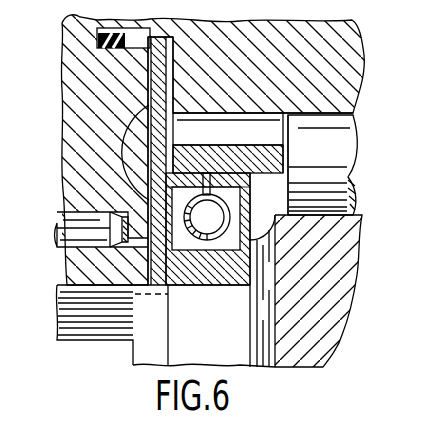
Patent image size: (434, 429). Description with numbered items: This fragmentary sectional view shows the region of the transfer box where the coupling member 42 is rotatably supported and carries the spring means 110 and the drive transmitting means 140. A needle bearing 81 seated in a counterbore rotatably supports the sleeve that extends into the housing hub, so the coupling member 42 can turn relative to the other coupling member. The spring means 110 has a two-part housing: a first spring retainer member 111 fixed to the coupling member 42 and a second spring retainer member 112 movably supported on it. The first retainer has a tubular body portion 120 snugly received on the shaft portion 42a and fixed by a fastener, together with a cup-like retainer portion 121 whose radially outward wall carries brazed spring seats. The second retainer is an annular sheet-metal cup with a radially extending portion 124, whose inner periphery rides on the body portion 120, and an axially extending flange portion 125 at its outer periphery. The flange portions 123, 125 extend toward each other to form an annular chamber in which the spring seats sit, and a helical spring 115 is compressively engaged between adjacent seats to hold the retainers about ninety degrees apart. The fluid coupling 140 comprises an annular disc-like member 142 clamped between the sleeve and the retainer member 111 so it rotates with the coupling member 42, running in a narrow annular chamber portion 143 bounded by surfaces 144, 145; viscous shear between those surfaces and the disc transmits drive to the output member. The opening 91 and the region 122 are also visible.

The coupling member 42 is at (340, 345).
The shaft portion 42a is at (78, 285).
The needle bearing 81 is at (68, 228).
The slot 91 is at (231, 141).
The spring means 110 is at (251, 205).
The first spring retainer member 111 is at (185, 283).
The second spring retainer member 112 is at (250, 188).
The helical spring 115 is at (238, 201).
The body portion 120 is at (246, 282).
The retainer portion 121 is at (150, 168).
The bore 122 is at (166, 204).
The flange portion 123 is at (204, 168).
The radially extending portion 124 is at (250, 226).
The flange portion 125 is at (237, 158).
The drive transmitting means 140 is at (138, 83).
The annular disc-like member 142 is at (160, 80).
The annular chamber portion 143 is at (173, 39).
The surface 144 is at (150, 63).
The surface 145 is at (174, 60).